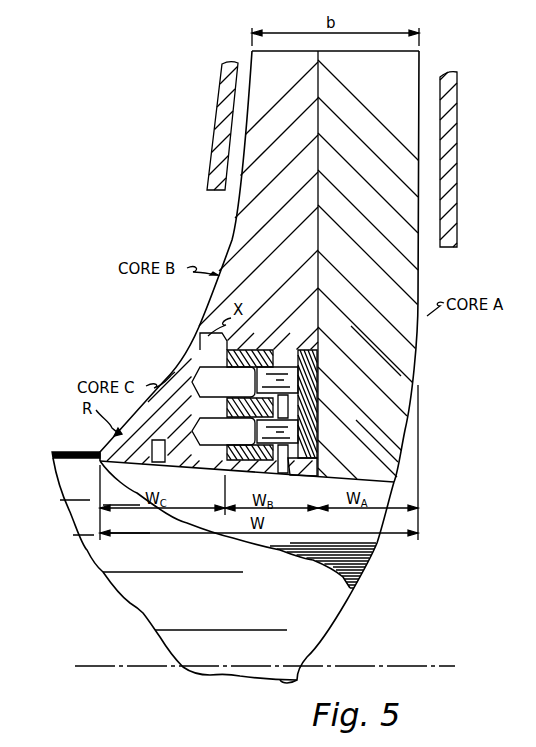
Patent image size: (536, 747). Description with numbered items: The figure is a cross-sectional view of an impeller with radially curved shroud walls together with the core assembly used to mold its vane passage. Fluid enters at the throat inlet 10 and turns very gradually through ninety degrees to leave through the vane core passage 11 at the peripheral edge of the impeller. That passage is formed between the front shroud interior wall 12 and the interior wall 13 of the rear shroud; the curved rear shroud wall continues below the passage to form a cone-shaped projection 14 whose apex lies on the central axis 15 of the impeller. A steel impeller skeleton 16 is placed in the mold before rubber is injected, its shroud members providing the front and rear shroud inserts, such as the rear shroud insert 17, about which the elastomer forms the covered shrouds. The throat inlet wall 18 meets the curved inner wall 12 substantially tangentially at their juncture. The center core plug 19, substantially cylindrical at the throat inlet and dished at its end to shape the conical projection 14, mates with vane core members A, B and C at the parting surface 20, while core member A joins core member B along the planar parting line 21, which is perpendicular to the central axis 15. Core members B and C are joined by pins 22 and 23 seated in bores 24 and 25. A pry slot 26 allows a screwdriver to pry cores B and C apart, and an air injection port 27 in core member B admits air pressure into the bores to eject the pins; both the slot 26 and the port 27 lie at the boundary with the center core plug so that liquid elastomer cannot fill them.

The throat inlet 10 is at (70, 478).
The vane core passage 11 is at (237, 537).
The front shroud interior wall 12 is at (232, 240).
The interior wall of the rear shroud 13 is at (417, 375).
The cone-shaped projection 14 is at (332, 582).
The central axis of the impeller 15 is at (360, 665).
The steel impeller skeleton 16 is at (208, 167).
The rear shroud insert 17 is at (458, 185).
The throat inlet wall 18 is at (84, 451).
The center core plug 19 is at (173, 565).
The parting surface 20 is at (395, 478).
The parting line 21 is at (325, 205).
The pin 22 is at (245, 382).
The pin 23 is at (245, 431).
The bore 24 is at (276, 349).
The bore 25 is at (312, 412).
The pry slot 26 is at (160, 462).
The air injection port 27 is at (279, 472).